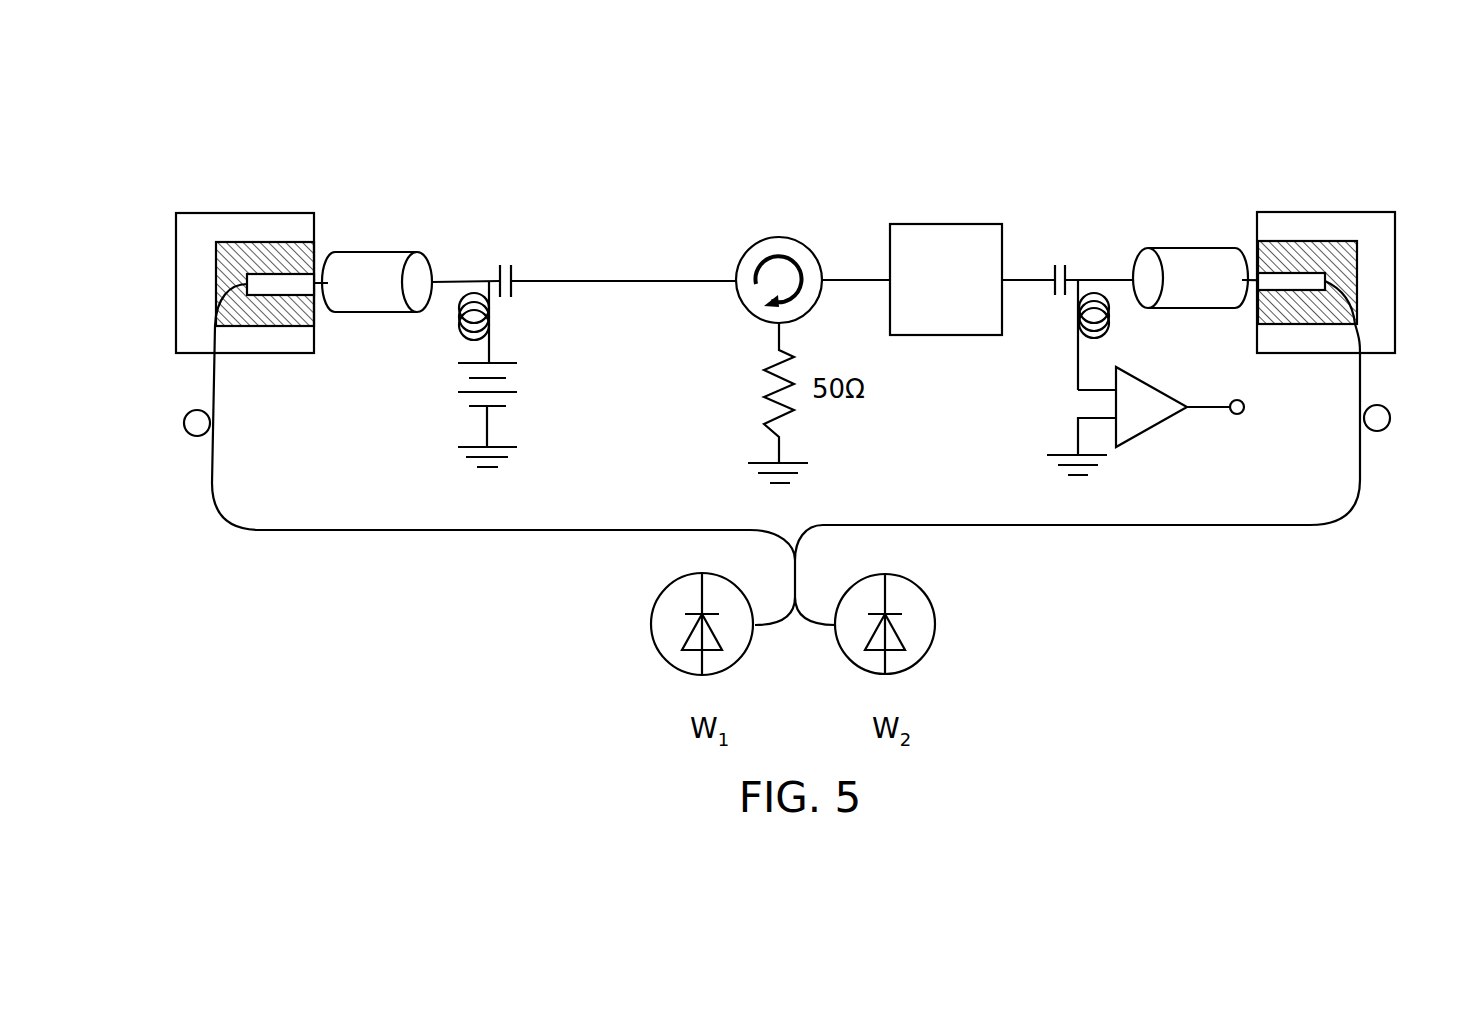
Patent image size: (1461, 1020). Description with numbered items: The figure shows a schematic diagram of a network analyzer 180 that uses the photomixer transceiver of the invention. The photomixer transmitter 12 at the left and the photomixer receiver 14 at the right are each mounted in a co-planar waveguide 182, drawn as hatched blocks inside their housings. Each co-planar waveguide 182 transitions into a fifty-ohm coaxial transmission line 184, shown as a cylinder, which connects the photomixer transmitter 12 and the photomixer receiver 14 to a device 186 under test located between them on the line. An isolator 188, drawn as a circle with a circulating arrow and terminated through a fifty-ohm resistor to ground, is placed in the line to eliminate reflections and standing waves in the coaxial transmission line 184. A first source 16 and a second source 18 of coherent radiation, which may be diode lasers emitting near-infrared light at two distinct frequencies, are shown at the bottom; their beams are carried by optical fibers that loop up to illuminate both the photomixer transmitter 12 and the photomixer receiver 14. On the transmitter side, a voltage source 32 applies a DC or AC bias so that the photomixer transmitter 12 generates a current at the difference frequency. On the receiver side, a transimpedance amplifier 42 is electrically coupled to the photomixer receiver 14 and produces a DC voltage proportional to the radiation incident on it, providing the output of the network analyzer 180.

The photomixer transmitter 12 is at (176, 283).
The photomixer receiver 14 is at (1395, 283).
The first source of coherent radiation 16 is at (663, 590).
The second source of coherent radiation 18 is at (926, 658).
The voltage source 32 is at (519, 385).
The transimpedance amplifier 42 is at (1155, 428).
The network analyzer 180 is at (746, 130).
The co-planar waveguide 182 is at (262, 242).
The 50-Ω coaxial transmission line 184 is at (378, 252).
The device under test 186 is at (935, 225).
The isolator 188 is at (790, 236).